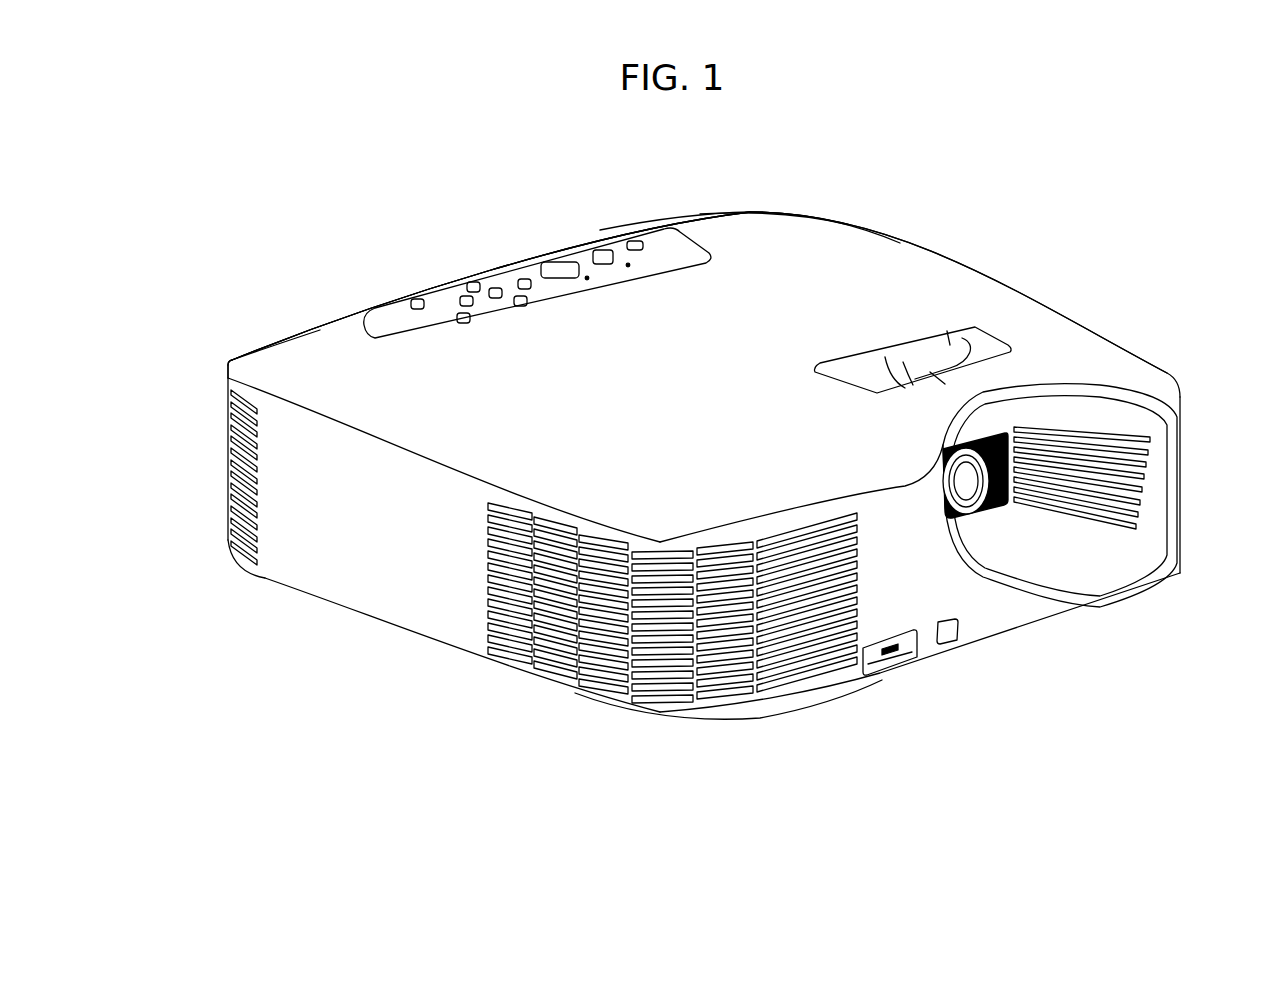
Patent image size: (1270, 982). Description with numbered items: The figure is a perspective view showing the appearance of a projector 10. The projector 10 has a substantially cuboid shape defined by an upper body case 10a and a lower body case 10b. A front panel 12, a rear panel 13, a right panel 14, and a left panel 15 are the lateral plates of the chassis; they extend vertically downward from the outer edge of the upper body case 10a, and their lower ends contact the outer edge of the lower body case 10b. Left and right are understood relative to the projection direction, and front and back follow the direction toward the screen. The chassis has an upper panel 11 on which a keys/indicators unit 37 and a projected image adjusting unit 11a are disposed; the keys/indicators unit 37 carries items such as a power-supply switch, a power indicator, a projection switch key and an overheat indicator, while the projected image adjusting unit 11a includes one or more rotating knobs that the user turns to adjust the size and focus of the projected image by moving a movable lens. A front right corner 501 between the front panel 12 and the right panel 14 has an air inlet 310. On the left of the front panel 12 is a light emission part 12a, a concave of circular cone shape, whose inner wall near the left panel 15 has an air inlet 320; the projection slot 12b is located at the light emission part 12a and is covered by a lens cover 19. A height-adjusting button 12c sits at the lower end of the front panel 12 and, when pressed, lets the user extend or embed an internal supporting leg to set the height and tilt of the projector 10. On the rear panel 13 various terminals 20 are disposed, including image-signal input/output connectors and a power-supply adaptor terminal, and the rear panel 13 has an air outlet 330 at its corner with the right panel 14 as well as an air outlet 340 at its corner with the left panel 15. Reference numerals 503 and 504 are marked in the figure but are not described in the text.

The projector 10 is at (296, 212).
The upper body case 10a is at (300, 338).
The lower body case 10b is at (263, 578).
The upper panel 11 is at (800, 254).
The projected image adjusting unit 11a is at (914, 354).
The front panel 12 is at (980, 624).
The light emission part 12a is at (1102, 416).
The projection slot 12b is at (1003, 420).
The height-adjusting button 12c is at (888, 674).
The rear panel 13 is at (356, 302).
The right panel 14 is at (350, 580).
The left panel 15 is at (1092, 335).
The lens cover 19 is at (985, 512).
The terminals 20 is at (462, 252).
The keys/indicators unit 37 is at (668, 248).
The air inlet 310 is at (648, 700).
The air inlet 320 is at (1122, 432).
The air outlet 330 is at (228, 418).
The air outlet 340 is at (776, 204).
The front right corner 501 is at (720, 740).
The left exterior member 503 is at (214, 343).
The upper exterior member 504 is at (792, 204).